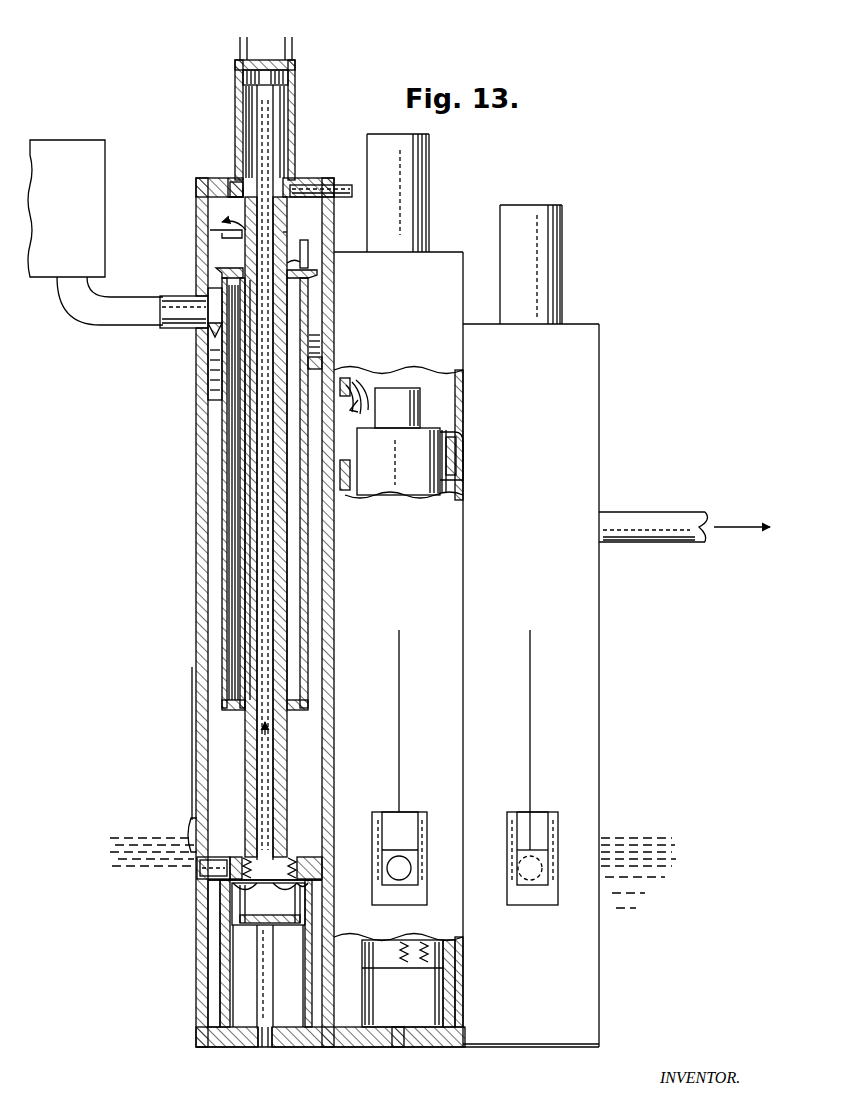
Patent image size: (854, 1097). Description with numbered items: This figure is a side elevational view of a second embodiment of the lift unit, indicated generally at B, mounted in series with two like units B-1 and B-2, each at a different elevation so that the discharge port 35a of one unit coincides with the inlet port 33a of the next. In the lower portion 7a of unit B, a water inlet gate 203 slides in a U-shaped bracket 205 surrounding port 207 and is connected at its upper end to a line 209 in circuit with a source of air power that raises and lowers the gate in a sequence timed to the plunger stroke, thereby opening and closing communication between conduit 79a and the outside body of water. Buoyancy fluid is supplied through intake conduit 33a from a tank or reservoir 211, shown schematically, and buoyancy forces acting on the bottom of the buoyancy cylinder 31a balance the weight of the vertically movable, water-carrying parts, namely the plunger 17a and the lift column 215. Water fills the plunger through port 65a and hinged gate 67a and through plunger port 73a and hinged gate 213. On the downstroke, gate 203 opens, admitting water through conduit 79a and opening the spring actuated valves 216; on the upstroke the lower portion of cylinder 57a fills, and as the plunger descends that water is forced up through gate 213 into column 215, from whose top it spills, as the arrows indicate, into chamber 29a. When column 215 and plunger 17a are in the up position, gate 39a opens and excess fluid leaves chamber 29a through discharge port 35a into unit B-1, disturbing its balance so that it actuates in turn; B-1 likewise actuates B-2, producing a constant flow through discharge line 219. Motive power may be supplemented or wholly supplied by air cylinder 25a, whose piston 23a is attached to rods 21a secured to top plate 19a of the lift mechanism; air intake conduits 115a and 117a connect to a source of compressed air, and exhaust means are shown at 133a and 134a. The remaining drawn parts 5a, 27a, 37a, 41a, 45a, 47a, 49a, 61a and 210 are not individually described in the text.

The housing 5a is at (194, 641).
The lower portion 7a is at (192, 910).
The plunger 17a is at (232, 908).
The top plate 19a is at (246, 238).
The rods 21a is at (254, 127).
The piston 23a is at (285, 83).
The air cylinder 25a is at (241, 98).
The tube wall 27a is at (247, 478).
The chamber 29a is at (215, 737).
The buoyancy cylinder 31a is at (233, 520).
The intake conduit 33a is at (172, 313).
The discharge port 35a is at (340, 358).
The nozzle 37a is at (220, 328).
The gate 39a is at (312, 333).
The elbow 41a is at (305, 263).
The flow arrow 45a is at (207, 220).
The tube layer 47a is at (243, 412).
The ribs 49a is at (207, 357).
The cylinder 57a is at (227, 973).
The annular space 61a is at (218, 1007).
The port 65a is at (264, 1048).
The hinged gate 67a is at (273, 1048).
The plunger port 73a is at (267, 928).
The conduit 79a is at (215, 857).
The air intake conduit 115a is at (342, 185).
The air intake conduit 117a is at (292, 45).
The exhaust means 133a is at (233, 181).
The exhaust means 134a is at (240, 45).
The water inlet gate 203 is at (197, 862).
The U-shaped bracket 205 is at (190, 823).
The port 207 is at (407, 868).
The line 209 is at (196, 712).
The layer 210 is at (248, 447).
The tank or reservoir 211 is at (70, 150).
The hinged gate 213 is at (283, 917).
The lift column 215 is at (303, 231).
The spring actuated valves 216 is at (233, 887).
The discharge line 219 is at (632, 517).
The lift unit B is at (204, 475).
The lift unit B-1 is at (441, 240).
The lift unit B-2 is at (570, 300).